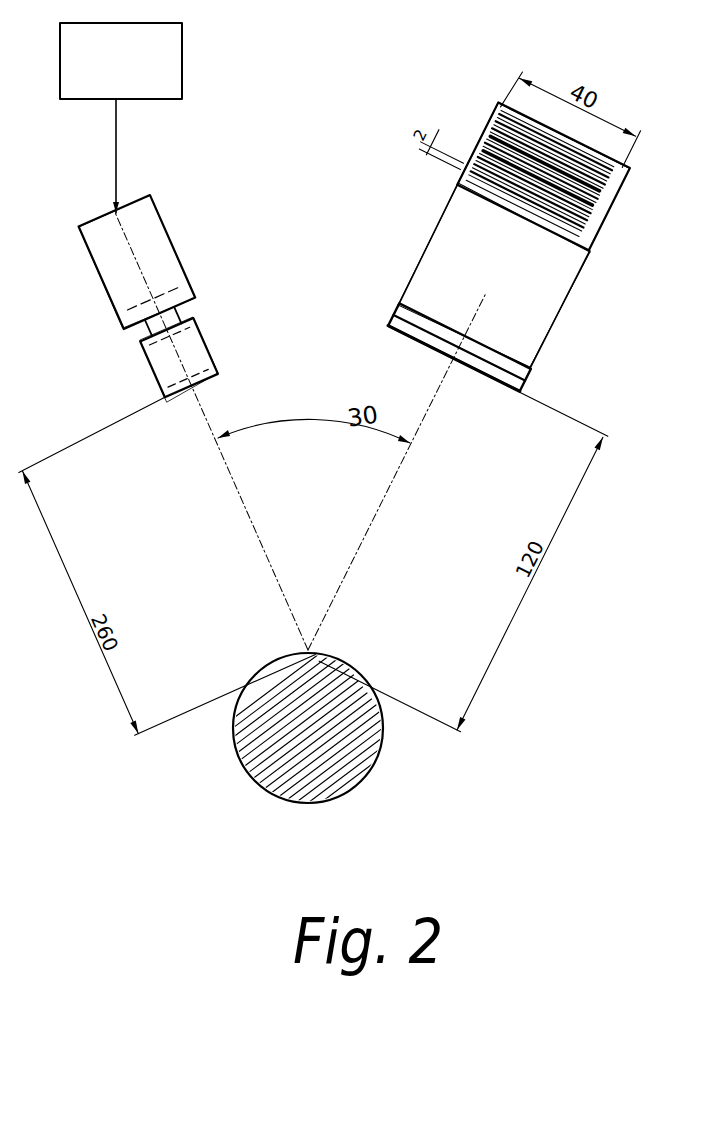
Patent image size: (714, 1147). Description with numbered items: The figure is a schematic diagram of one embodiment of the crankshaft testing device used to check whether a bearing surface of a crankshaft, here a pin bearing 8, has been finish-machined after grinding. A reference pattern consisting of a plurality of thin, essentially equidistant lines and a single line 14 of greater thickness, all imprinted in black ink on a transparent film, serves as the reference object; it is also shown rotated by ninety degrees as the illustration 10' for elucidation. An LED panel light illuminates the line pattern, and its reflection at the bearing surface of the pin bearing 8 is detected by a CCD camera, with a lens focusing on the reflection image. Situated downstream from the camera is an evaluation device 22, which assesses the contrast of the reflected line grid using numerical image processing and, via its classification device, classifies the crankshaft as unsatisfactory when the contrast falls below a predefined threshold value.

The pin bearing 8 is at (375, 762).
The illustration of the reference pattern rotated by 90° 10' is at (444, 217).
The line of greater line thickness 14 is at (480, 143).
The evaluation device 22 is at (95, 80).